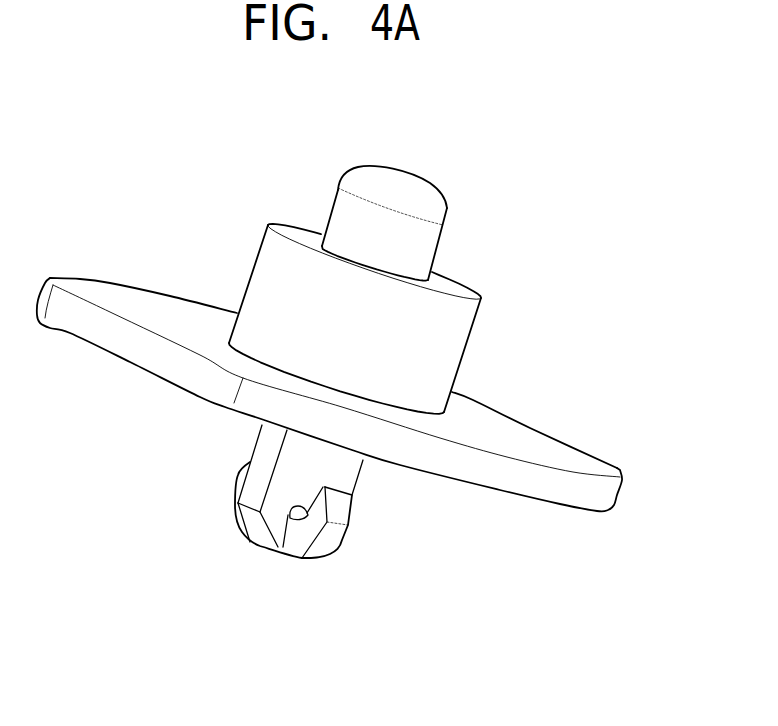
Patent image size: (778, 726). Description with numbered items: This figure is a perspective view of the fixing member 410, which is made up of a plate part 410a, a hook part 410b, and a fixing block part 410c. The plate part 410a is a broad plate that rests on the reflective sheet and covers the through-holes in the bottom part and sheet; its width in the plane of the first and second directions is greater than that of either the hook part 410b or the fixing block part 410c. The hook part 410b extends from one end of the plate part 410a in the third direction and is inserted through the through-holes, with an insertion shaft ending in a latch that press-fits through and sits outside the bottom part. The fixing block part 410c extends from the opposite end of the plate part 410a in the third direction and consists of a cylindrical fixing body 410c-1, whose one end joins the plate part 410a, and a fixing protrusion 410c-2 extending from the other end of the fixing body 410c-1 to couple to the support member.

The fixing member 410 is at (205, 168).
The plate part 410a is at (607, 494).
The hook part 410b is at (395, 630).
The fixing block part 410c is at (600, 233).
The fixing body 410c-1 is at (453, 340).
The fixing protrusion 410c-2 is at (432, 242).